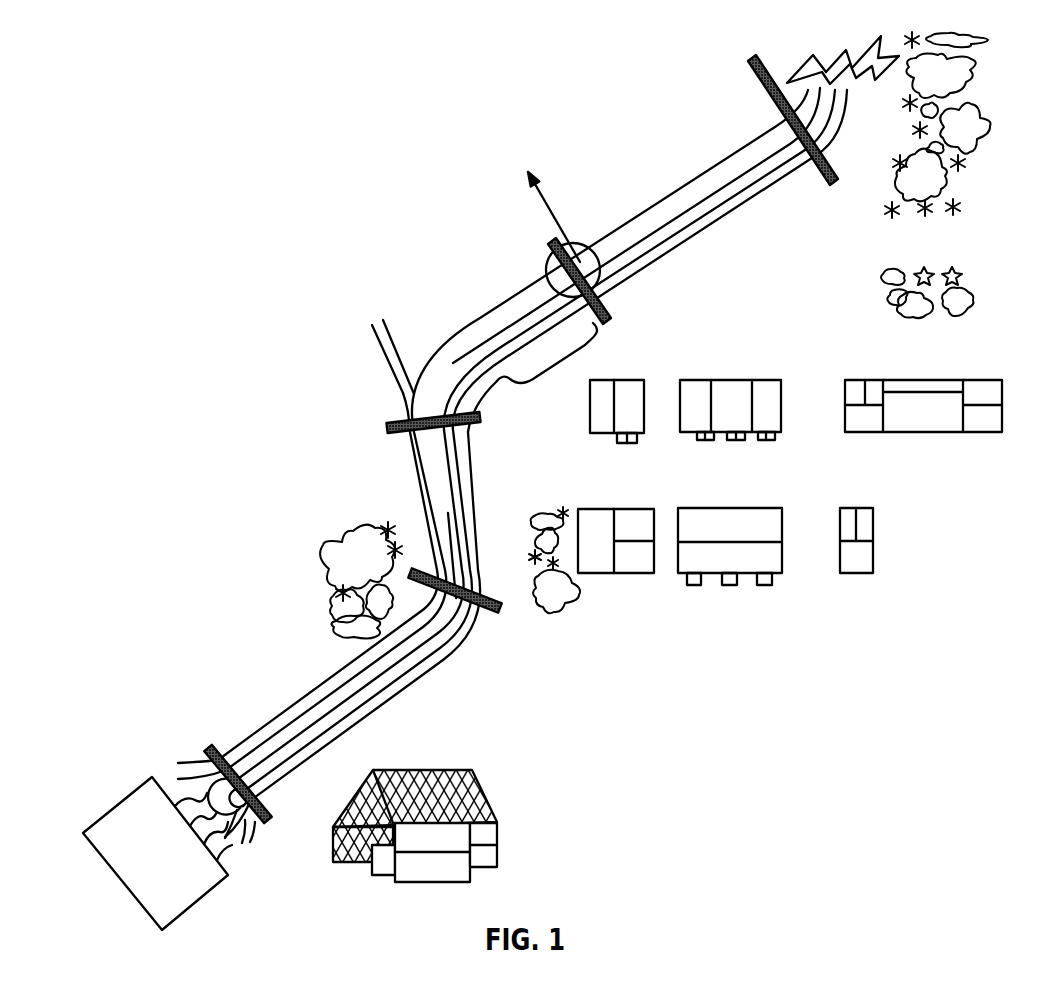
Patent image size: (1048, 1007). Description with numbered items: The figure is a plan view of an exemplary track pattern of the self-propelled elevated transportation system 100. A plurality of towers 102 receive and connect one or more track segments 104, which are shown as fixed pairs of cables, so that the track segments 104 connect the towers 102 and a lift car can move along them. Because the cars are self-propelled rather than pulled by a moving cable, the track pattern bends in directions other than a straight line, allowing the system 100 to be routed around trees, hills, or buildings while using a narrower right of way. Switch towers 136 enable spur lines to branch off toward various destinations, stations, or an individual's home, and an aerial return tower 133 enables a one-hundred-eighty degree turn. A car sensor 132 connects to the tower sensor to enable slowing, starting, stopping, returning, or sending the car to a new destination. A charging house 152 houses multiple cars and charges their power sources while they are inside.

The self-propelled elevated transportation system 100 is at (357, 80).
The tower 102 is at (840, 187).
The track segment 104 is at (705, 171).
The car sensor 132 is at (603, 320).
The aerial return tower 133 is at (223, 840).
The switch tower 136 is at (388, 440).
The charging house 152 is at (106, 862).